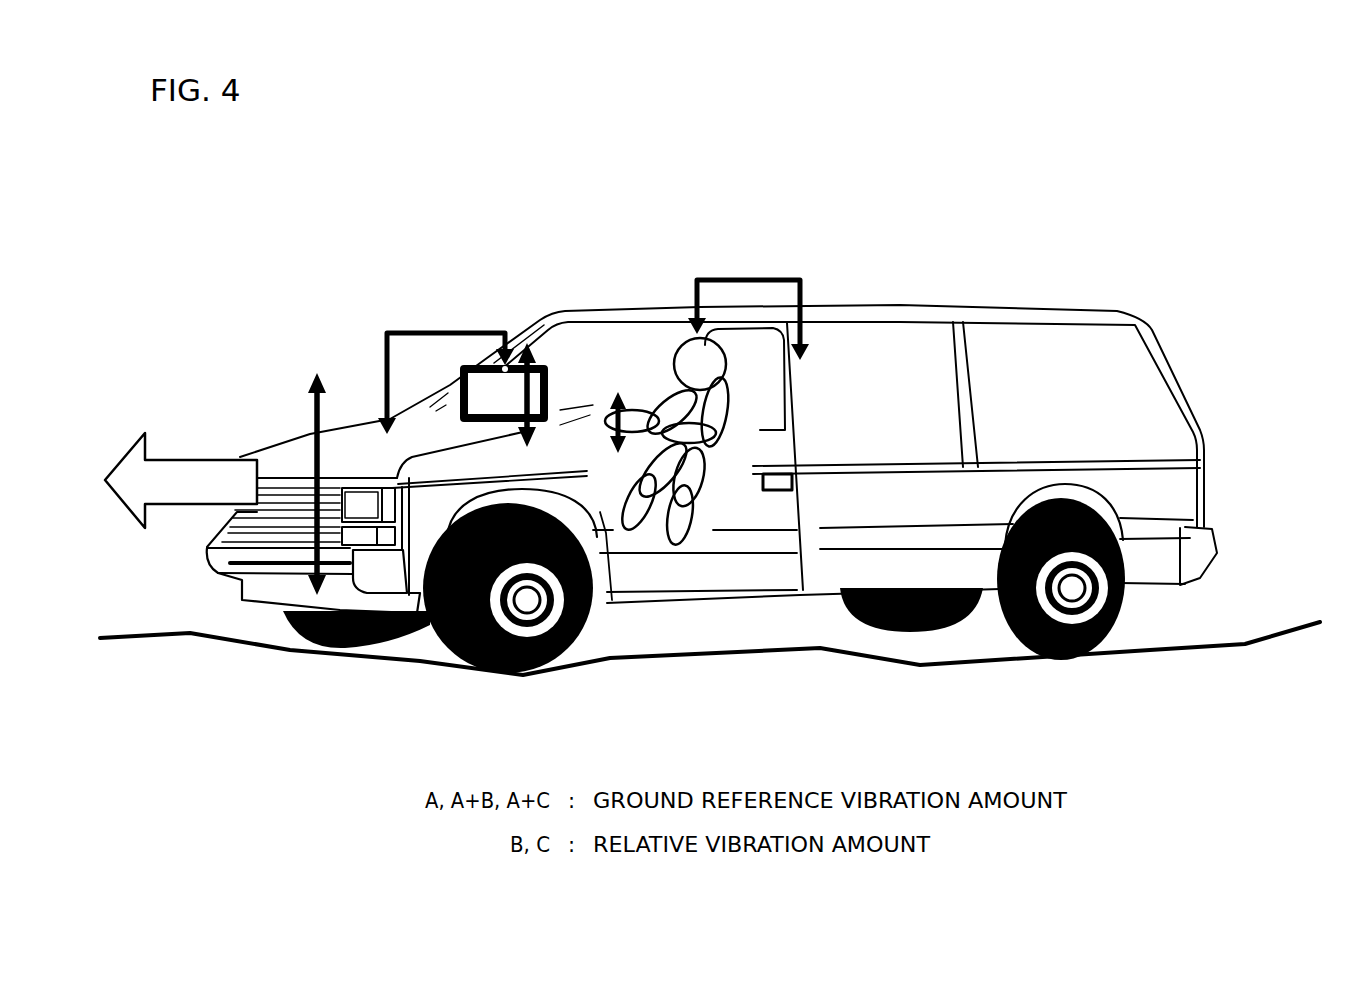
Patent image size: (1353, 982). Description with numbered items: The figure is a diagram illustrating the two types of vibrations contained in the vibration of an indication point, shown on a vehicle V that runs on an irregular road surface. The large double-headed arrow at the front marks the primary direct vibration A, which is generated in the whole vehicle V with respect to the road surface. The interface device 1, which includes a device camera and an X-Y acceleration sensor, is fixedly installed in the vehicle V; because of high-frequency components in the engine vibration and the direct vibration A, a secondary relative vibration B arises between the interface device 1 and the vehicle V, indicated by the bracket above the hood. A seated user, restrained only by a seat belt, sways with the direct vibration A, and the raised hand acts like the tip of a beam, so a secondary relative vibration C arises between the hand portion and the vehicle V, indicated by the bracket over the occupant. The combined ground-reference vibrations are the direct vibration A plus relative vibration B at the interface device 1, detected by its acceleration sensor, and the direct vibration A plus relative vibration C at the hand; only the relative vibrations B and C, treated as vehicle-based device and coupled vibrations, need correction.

The interface device 1 is at (480, 405).
The vehicle V is at (1019, 296).
The direct vibration A is at (312, 412).
The relative vibration (device vibration) B is at (433, 330).
The relative vibration (coupled vibration) C is at (752, 281).